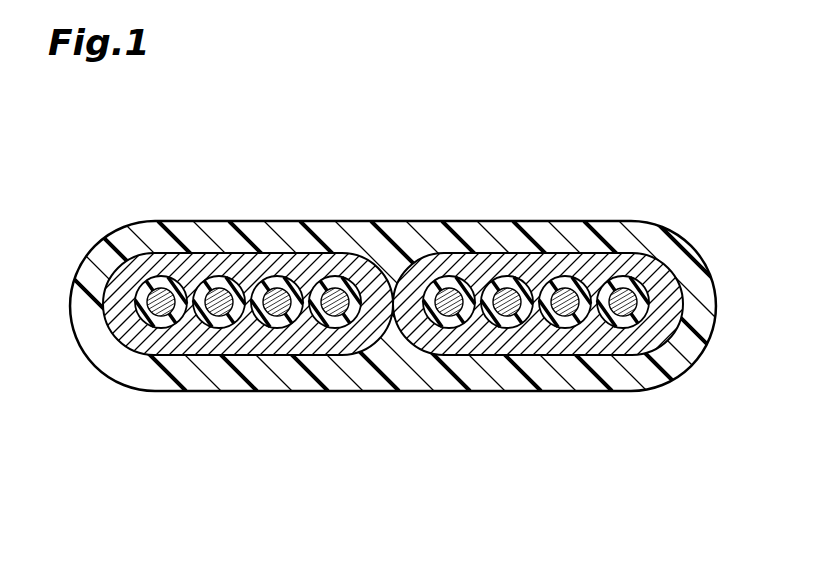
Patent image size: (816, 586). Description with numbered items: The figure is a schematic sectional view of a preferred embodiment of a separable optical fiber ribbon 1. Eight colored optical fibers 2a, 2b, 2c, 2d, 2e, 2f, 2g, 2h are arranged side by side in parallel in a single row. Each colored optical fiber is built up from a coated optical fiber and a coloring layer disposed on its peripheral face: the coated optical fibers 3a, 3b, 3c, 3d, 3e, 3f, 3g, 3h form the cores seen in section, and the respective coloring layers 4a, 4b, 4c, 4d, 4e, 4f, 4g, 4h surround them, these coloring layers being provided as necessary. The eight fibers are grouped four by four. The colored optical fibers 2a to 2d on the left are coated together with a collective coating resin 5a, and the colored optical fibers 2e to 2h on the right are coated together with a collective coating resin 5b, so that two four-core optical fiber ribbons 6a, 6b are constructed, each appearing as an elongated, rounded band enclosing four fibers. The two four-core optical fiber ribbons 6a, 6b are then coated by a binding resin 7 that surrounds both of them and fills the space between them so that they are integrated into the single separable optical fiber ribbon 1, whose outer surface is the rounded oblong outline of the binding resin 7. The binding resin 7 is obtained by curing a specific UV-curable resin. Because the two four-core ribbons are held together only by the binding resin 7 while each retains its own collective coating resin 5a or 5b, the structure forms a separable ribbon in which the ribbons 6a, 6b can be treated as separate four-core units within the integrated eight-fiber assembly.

The separable optical fiber ribbon 1 is at (641, 130).
The colored optical fiber 2a is at (164, 410).
The colored optical fiber 2b is at (225, 378).
The colored optical fiber 2c is at (283, 410).
The colored optical fiber 2d is at (342, 378).
The colored optical fiber 2e is at (451, 410).
The colored optical fiber 2f is at (512, 379).
The colored optical fiber 2g is at (568, 410).
The colored optical fiber 2h is at (629, 379).
The coated optical fiber 3a is at (156, 314).
The coated optical fiber 3b is at (214, 314).
The coated optical fiber 3c is at (272, 314).
The coated optical fiber 3d is at (330, 314).
The coated optical fiber 3e is at (444, 314).
The coated optical fiber 3f is at (502, 314).
The coated optical fiber 3g is at (560, 314).
The coated optical fiber 3h is at (618, 314).
The coloring layer 4a is at (175, 324).
The coloring layer 4b is at (233, 324).
The coloring layer 4c is at (291, 324).
The coloring layer 4d is at (349, 324).
The coloring layer 4e is at (463, 324).
The coloring layer 4f is at (521, 324).
The coloring layer 4g is at (579, 324).
The coloring layer 4h is at (637, 324).
The collective coating resin 5a is at (395, 347).
The collective coating resin 5b is at (395, 347).
The four-core optical fiber ribbon 6a is at (258, 252).
The four-core optical fiber ribbon 6b is at (538, 252).
The binding resin 7 is at (699, 283).